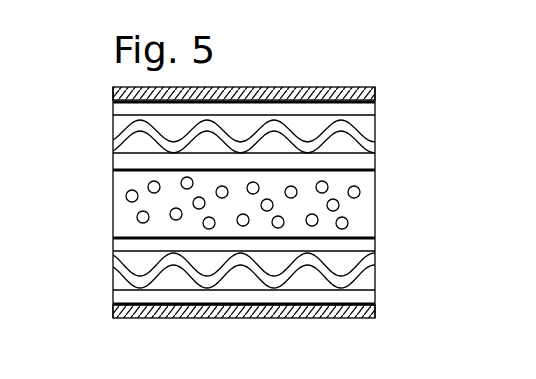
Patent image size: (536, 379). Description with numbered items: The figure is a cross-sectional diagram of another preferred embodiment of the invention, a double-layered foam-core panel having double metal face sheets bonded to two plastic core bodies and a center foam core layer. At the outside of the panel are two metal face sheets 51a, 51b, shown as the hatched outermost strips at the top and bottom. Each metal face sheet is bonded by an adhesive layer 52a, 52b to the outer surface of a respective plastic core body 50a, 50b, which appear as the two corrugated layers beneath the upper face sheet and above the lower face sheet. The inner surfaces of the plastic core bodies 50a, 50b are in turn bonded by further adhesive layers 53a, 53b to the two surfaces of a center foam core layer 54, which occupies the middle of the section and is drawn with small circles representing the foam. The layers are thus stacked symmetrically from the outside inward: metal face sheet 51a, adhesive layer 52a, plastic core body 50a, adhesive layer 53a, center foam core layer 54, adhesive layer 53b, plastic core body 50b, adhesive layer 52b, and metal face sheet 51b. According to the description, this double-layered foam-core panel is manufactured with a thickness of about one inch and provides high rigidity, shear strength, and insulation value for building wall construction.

The plastic core body 50a is at (93, 102).
The plastic core body 50b is at (93, 238).
The metal face sheet 51a is at (265, 87).
The metal face sheet 51b is at (262, 318).
The adhesive layer 52a is at (418, 105).
The adhesive layer 52b is at (418, 306).
The adhesive layer 53a is at (418, 171).
The adhesive layer 53b is at (418, 240).
The center foam core layer 54 is at (418, 205).